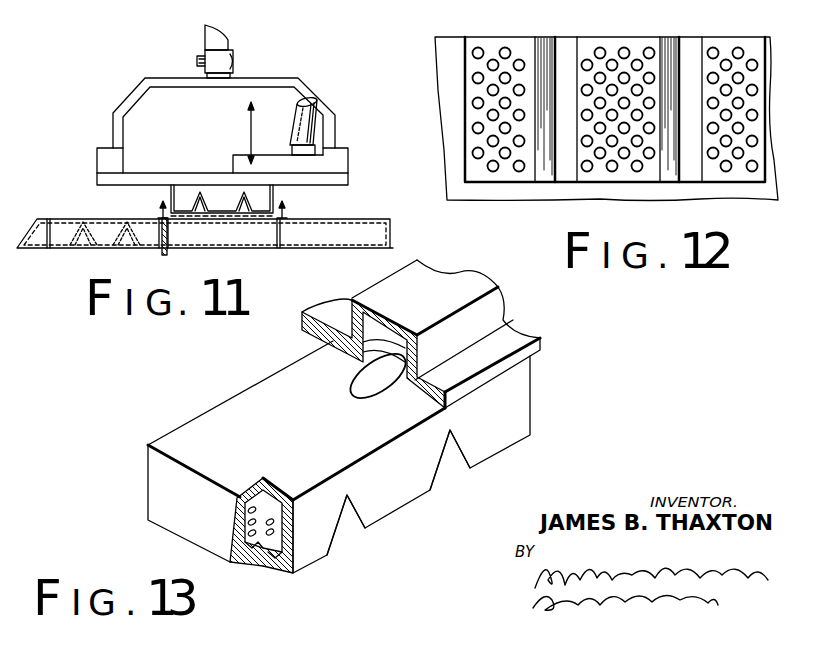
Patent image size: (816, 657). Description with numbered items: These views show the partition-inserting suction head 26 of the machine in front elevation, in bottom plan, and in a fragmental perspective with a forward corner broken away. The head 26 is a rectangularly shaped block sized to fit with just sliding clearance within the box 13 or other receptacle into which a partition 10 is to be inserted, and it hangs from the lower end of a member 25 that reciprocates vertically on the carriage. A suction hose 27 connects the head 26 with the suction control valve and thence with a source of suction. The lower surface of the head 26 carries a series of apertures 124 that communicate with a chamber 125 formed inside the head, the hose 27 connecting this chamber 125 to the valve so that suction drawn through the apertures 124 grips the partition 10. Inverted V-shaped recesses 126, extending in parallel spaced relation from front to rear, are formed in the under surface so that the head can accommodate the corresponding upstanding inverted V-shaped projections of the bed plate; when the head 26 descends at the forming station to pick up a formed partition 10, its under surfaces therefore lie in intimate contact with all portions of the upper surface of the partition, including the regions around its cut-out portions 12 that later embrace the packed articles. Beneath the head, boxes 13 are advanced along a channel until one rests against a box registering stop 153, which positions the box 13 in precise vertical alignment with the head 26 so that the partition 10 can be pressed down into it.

In FIG. 11, the box partition 10 is at (97, 217).
In FIG. 11, the cut-out portion 12 is at (222, 201).
In FIG. 11, the box 13 is at (114, 239).
In FIG. 11, the member 25 is at (203, 38).
In FIG. 11, the partition-inserting suction head 26 is at (215, 190).
In FIG. 12, the partition-inserting suction head 26 is at (606, 121).
In FIG. 13, the partition-inserting suction head 26 is at (344, 423).
In FIG. 11, the suction hose 27 is at (293, 122).
In FIG. 12, the apertures 124 is at (634, 171).
In FIG. 13, the apertures 124 is at (264, 545).
In FIG. 13, the chamber 125 is at (262, 495).
In FIG. 12, the inverted V-shaped recesses 126 is at (566, 47).
In FIG. 13, the inverted V-shaped recesses 126 is at (458, 460).
In FIG. 11, the box registering stop 153 is at (170, 237).